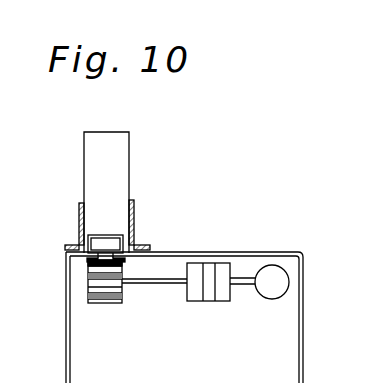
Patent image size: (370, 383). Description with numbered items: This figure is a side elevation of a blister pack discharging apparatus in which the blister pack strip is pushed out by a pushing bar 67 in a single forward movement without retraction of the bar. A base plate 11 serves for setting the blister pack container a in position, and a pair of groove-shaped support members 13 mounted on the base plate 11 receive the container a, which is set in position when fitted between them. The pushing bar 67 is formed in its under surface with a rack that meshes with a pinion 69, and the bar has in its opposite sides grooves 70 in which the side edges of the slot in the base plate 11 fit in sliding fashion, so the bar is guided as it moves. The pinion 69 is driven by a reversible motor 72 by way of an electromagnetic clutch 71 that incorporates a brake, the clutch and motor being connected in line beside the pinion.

The blister pack container a is at (123, 180).
The base plate 11 is at (92, 256).
The support members 13 is at (79, 222).
The pushing bar 67 is at (105, 244).
The pinion 69 is at (107, 303).
The grooves 70 is at (124, 262).
The electromagnetic clutch 71 is at (212, 265).
The reversible motor 72 is at (270, 297).